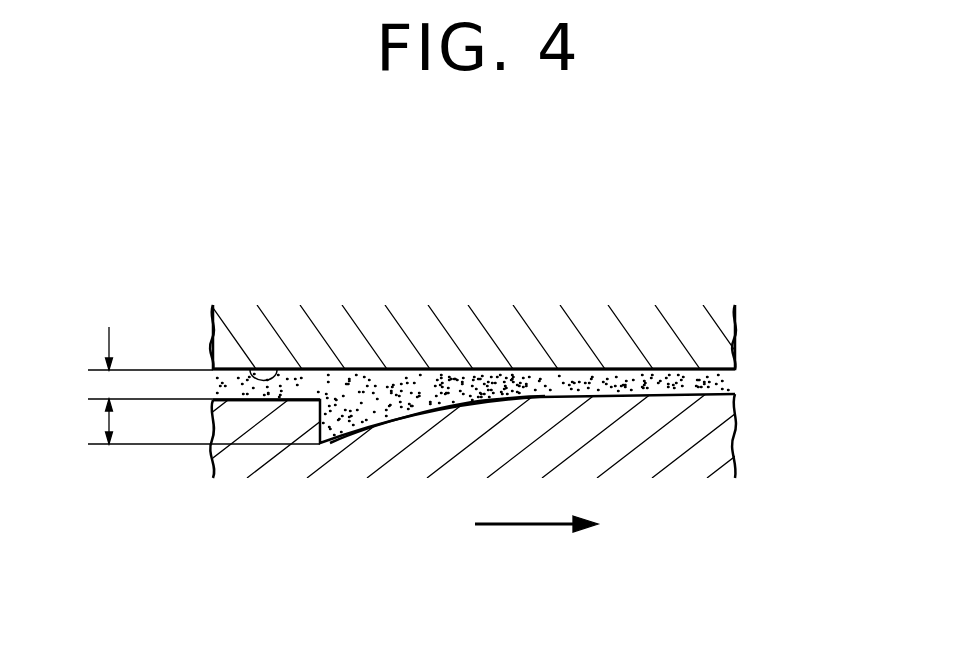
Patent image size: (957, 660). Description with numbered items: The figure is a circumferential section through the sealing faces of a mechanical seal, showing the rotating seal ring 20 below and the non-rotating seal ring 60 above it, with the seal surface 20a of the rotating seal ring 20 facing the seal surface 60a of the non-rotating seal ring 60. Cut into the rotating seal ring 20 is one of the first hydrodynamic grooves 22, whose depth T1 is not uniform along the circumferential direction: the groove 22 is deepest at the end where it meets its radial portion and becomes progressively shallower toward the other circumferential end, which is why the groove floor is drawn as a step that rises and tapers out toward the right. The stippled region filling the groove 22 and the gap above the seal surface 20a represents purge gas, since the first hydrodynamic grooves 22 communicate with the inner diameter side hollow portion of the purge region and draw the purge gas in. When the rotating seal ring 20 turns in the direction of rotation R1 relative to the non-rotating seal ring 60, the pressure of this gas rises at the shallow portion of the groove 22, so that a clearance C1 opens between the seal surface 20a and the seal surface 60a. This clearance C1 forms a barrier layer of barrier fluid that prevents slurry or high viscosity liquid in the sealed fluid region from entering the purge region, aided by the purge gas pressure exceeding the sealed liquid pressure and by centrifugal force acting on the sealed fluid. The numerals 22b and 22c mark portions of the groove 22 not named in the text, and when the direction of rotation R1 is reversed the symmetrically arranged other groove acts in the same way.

The rotating seal ring 20 is at (710, 440).
The seal surface of the rotating seal ring 20a is at (300, 400).
The first hydrodynamic groove 22 is at (399, 408).
The groove bottom surface 22b is at (458, 385).
The groove end portion 22c is at (522, 380).
The non-rotating seal ring 60 is at (707, 340).
The seal surface of the non-rotating seal ring 60a is at (273, 378).
The clearance C1 is at (186, 362).
The depth of the first hydrodynamic grooves T1 is at (183, 421).
The direction of rotation R1 is at (530, 526).